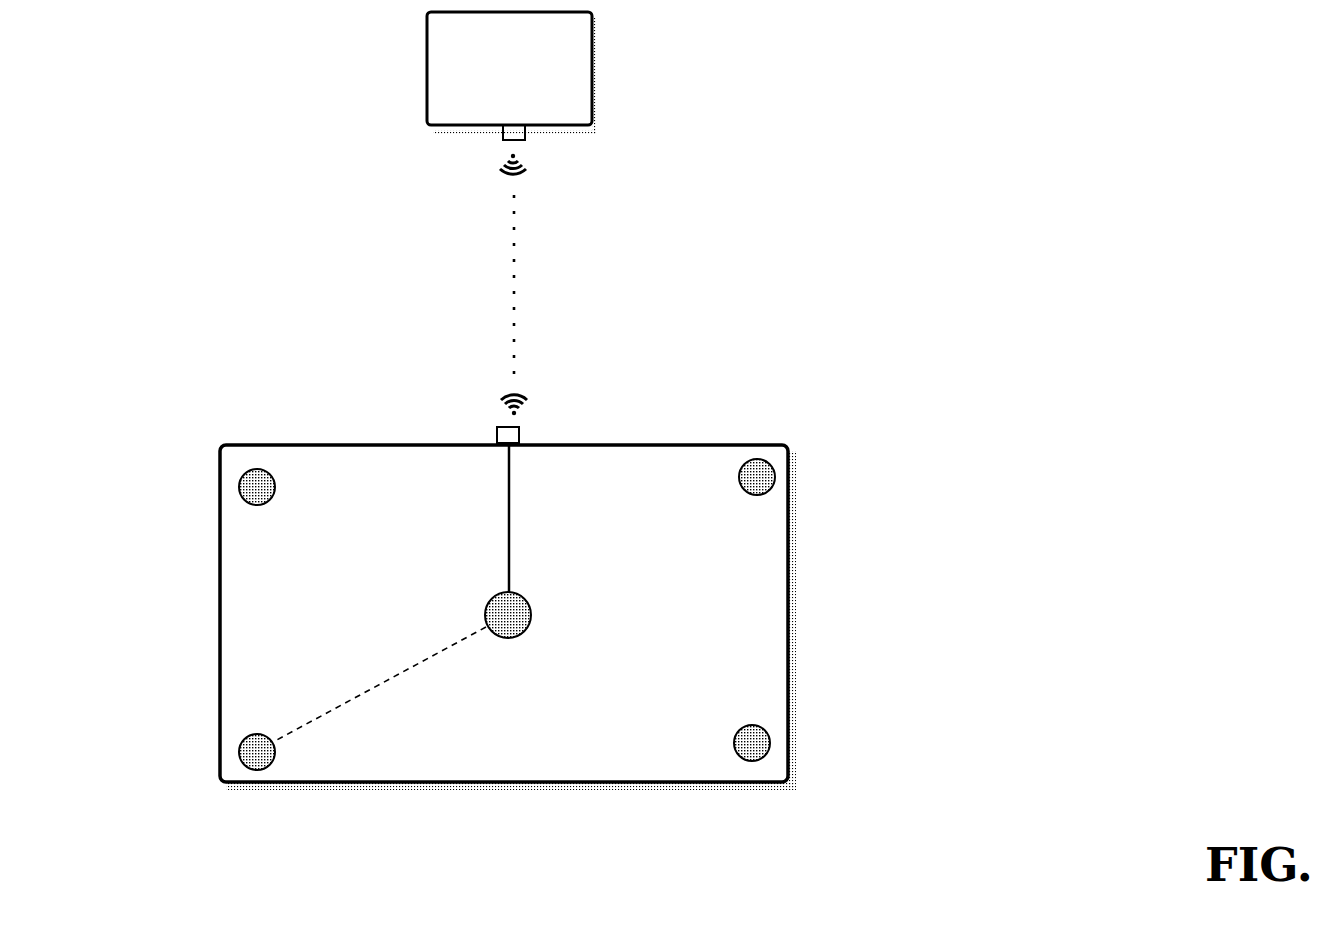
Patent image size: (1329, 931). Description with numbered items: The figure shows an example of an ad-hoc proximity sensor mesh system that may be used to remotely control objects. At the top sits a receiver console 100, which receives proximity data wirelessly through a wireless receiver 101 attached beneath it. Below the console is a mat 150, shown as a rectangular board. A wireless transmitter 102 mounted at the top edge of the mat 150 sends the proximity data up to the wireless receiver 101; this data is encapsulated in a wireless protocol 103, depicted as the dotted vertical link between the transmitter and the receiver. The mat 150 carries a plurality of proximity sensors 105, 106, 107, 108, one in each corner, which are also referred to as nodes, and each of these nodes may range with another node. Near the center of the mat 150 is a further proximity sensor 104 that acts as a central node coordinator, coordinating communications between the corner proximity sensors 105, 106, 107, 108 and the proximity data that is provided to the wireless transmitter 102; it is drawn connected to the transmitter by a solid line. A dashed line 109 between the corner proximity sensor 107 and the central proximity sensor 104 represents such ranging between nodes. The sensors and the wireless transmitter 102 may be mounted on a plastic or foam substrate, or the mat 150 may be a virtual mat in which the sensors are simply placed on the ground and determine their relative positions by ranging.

The receiver console 100 is at (437, 100).
The wireless receiver 101 is at (498, 172).
The wireless transmitter 102 is at (497, 418).
The wireless protocol 103 is at (500, 313).
The proximity sensor 104 is at (495, 590).
The proximity sensor 105 is at (235, 465).
The proximity sensor 106 is at (750, 455).
The proximity sensor 107 is at (238, 730).
The proximity sensor 108 is at (750, 725).
The connection between sensors 109 is at (425, 650).
The mat 150 is at (535, 609).